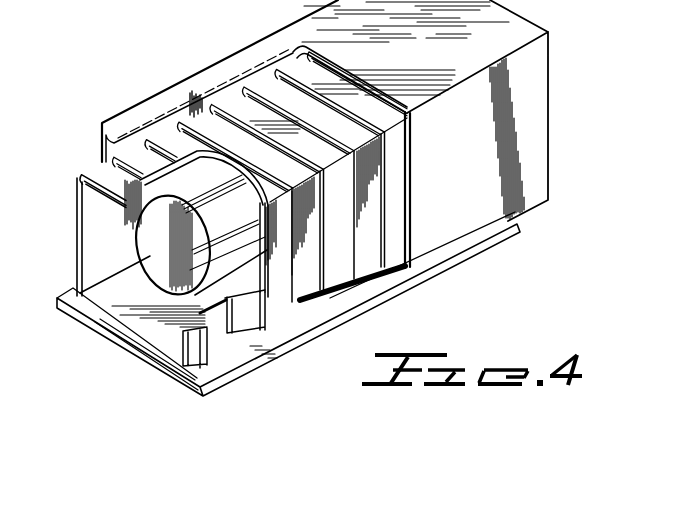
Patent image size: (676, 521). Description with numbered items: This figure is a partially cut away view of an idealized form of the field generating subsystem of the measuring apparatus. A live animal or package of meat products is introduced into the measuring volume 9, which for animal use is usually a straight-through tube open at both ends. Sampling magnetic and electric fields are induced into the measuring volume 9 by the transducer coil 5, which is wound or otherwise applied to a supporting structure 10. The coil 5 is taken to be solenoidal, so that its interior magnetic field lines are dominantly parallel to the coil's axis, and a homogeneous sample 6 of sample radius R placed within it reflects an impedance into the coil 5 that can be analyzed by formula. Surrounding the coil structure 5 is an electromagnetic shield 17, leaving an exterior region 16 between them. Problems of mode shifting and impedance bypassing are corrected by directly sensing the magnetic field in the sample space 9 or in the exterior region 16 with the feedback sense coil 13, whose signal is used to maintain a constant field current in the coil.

The electromagnetic shield 17 is at (528, 31).
The exterior region 16 is at (112, 148).
The transducer coil 5 is at (350, 233).
The feedback sense coil 13 is at (425, 221).
The measuring volume 9 is at (106, 242).
The homogeneous sample 6 is at (197, 226).
The sample radius R is at (158, 206).
The supporting structure 10 is at (90, 257).